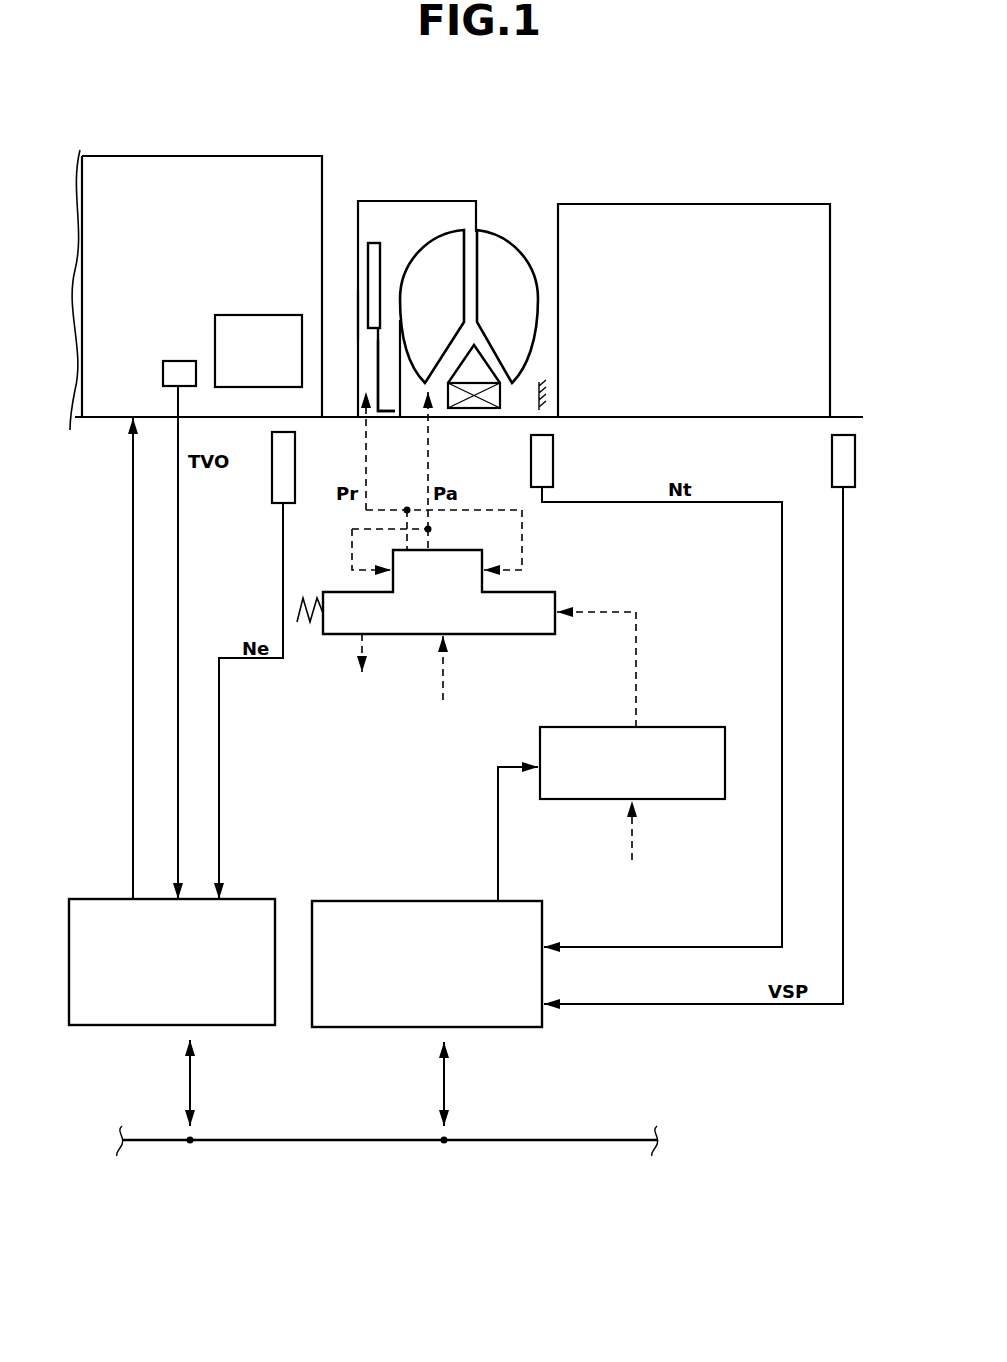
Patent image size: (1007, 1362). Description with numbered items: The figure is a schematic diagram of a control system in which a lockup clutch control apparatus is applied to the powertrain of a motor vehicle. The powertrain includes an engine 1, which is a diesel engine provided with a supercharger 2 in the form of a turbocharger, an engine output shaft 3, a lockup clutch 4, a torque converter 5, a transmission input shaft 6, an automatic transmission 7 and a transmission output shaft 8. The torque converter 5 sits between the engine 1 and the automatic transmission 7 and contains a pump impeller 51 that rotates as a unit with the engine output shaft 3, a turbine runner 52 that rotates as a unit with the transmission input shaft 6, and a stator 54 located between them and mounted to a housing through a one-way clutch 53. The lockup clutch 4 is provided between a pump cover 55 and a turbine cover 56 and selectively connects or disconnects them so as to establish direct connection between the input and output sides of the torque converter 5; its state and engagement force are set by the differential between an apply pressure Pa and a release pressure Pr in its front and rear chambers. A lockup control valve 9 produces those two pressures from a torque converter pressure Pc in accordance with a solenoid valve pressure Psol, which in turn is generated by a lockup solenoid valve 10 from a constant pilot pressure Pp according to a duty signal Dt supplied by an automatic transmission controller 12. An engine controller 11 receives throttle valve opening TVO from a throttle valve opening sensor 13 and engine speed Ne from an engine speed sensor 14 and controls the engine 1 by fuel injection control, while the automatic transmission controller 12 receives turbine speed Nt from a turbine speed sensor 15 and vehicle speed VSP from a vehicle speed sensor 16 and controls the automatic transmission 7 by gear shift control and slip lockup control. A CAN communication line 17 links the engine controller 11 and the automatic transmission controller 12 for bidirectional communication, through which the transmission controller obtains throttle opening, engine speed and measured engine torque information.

The engine 1 is at (228, 150).
The supercharger 2 is at (258, 315).
The engine output shaft 3 is at (343, 419).
The lockup clutch 4 is at (377, 240).
The torque converter 5 is at (527, 307).
The transmission input shaft 6 is at (521, 419).
The automatic transmission 7 is at (710, 200).
The transmission output shaft 8 is at (848, 417).
The lockup control valve 9 is at (530, 578).
The lockup solenoid valve 10 is at (668, 725).
The engine controller 11 is at (258, 895).
The automatic transmission controller 12 is at (412, 898).
The throttle valve opening sensor 13 is at (183, 361).
The engine speed sensor 14 is at (272, 462).
The turbine speed sensor 15 is at (531, 462).
The vehicle speed sensor 16 is at (832, 455).
The CAN communication line 17 is at (363, 1142).
The pump impeller 51 is at (488, 255).
The turbine runner 52 is at (432, 258).
The one-way clutch 53 is at (473, 404).
The stator 54 is at (474, 367).
The pump cover 55 is at (358, 311).
The turbine cover 56 is at (398, 385).